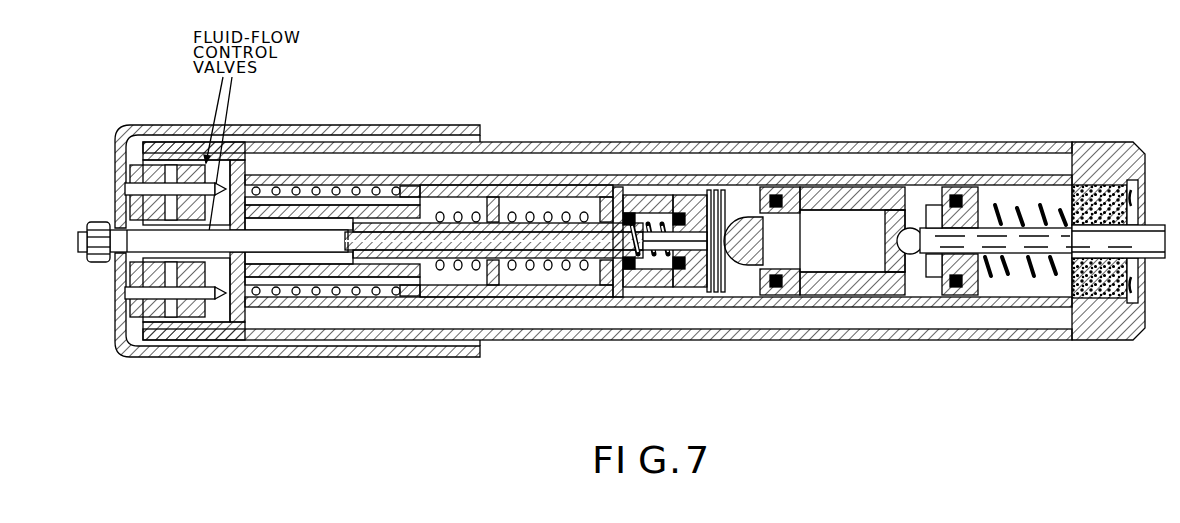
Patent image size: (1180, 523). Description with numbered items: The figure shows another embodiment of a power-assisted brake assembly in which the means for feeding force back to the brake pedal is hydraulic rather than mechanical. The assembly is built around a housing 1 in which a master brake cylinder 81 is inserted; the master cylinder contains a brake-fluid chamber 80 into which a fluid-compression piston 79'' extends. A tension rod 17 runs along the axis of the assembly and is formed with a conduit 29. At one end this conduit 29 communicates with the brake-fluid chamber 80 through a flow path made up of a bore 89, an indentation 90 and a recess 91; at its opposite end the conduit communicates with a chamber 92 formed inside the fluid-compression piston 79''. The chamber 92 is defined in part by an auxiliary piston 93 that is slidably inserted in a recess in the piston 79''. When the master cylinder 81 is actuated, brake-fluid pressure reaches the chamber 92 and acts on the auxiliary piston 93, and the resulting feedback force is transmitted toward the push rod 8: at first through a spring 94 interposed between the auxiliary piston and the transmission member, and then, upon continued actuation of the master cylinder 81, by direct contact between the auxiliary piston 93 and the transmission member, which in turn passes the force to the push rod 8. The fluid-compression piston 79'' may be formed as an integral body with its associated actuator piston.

The housing 1 is at (610, 147).
The push rod 8 is at (1153, 226).
The tension rod 17 is at (117, 282).
The conduit 29 is at (480, 240).
The fluid-compression piston 79'' is at (743, 194).
The brake-fluid chamber 80 is at (538, 190).
The master brake cylinder 81 is at (525, 297).
The bore 89 is at (315, 207).
The indentation 90 is at (263, 203).
The recess 91 is at (291, 227).
The chamber 92 is at (645, 193).
The auxiliary piston 93 is at (622, 257).
The spring 94 is at (645, 257).